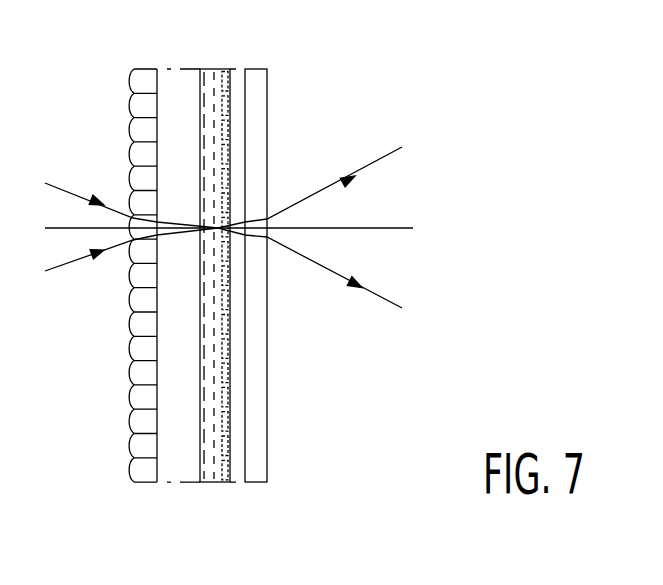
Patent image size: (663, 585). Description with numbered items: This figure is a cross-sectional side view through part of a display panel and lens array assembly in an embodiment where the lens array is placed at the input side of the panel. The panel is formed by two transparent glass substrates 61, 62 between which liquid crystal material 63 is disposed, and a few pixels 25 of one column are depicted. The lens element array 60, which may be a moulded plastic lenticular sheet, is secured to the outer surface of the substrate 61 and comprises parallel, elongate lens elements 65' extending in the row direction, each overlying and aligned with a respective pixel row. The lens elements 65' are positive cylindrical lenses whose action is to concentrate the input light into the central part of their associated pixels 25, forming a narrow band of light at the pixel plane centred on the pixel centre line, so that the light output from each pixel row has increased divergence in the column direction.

The pixels 25 is at (227, 85).
The lens element array 60 is at (108, 287).
The substrate 61 is at (168, 472).
The substrate 62 is at (247, 474).
The liquid crystal material 63 is at (215, 484).
The lens elements 65' is at (98, 105).